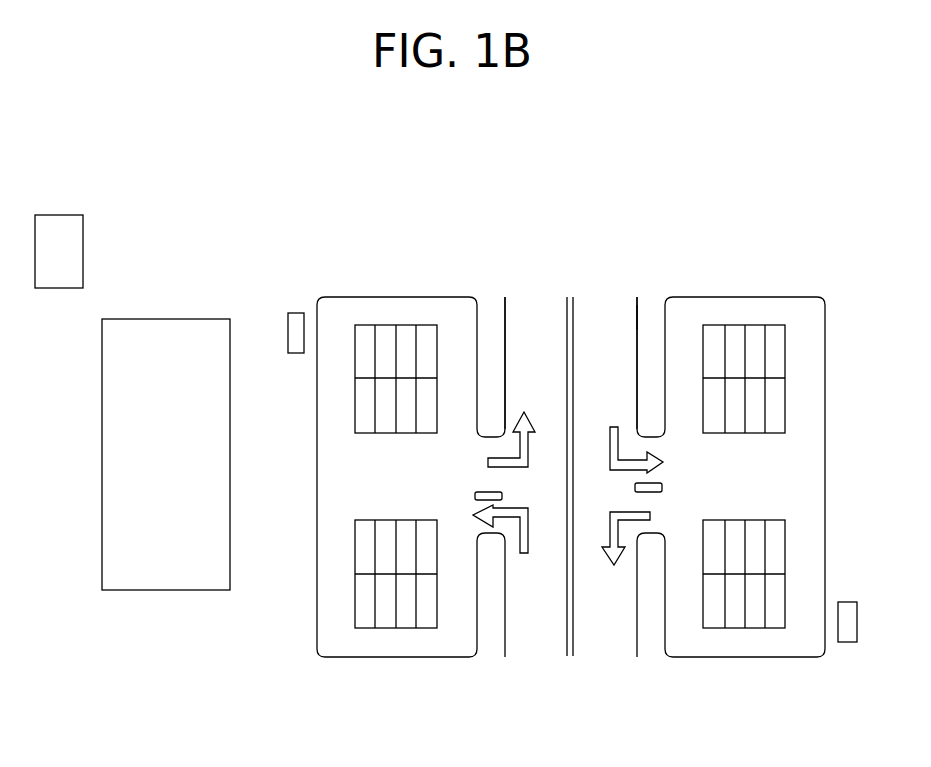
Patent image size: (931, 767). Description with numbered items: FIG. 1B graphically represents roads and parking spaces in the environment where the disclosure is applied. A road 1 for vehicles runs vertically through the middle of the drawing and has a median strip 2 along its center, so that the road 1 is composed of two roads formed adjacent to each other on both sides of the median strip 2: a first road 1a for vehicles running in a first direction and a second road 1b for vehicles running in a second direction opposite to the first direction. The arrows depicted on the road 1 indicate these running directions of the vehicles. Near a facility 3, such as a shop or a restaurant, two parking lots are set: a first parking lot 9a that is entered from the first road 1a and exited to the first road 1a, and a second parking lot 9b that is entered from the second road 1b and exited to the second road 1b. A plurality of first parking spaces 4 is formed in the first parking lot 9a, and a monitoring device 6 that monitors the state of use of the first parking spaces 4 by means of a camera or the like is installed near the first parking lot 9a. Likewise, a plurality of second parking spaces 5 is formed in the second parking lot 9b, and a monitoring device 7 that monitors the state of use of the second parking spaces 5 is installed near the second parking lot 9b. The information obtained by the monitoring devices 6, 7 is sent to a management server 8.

The road 1 is at (640, 311).
The first road 1a is at (527, 324).
The second road 1b is at (610, 325).
The median strip 2 is at (574, 318).
The facility 3 is at (170, 345).
The first parking spaces 4 is at (362, 352).
The second parking spaces 5 is at (777, 352).
The monitoring device 6 is at (296, 322).
The monitoring device 7 is at (847, 628).
The management server 8 is at (60, 232).
The first parking lot 9a is at (337, 320).
The second parking lot 9b is at (802, 322).